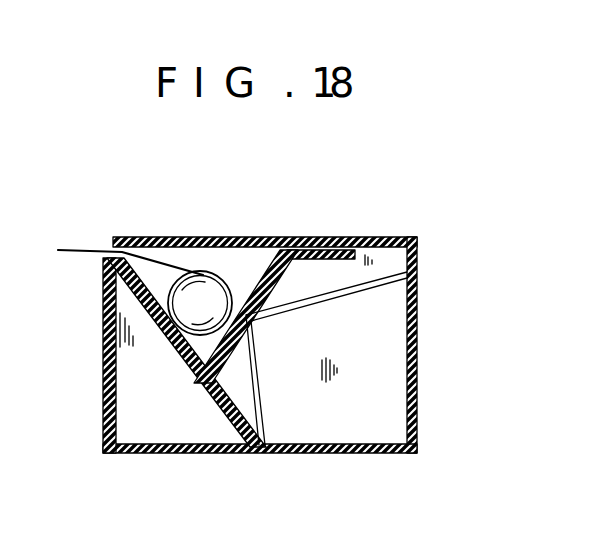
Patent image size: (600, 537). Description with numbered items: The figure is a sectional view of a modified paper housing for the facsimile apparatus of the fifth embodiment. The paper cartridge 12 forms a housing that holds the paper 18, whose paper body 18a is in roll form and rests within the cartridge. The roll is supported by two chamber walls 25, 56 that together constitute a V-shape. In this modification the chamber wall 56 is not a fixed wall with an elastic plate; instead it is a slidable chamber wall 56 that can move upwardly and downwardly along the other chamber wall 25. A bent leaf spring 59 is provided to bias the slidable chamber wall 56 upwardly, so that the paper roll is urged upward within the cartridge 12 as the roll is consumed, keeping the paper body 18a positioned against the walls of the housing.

The paper cartridge 12 is at (103, 405).
The paper 18 is at (70, 248).
The paper body 18a is at (176, 300).
The chamber wall 25 is at (222, 414).
The chamber wall 56 is at (323, 255).
The bent leaf spring 59 is at (383, 283).